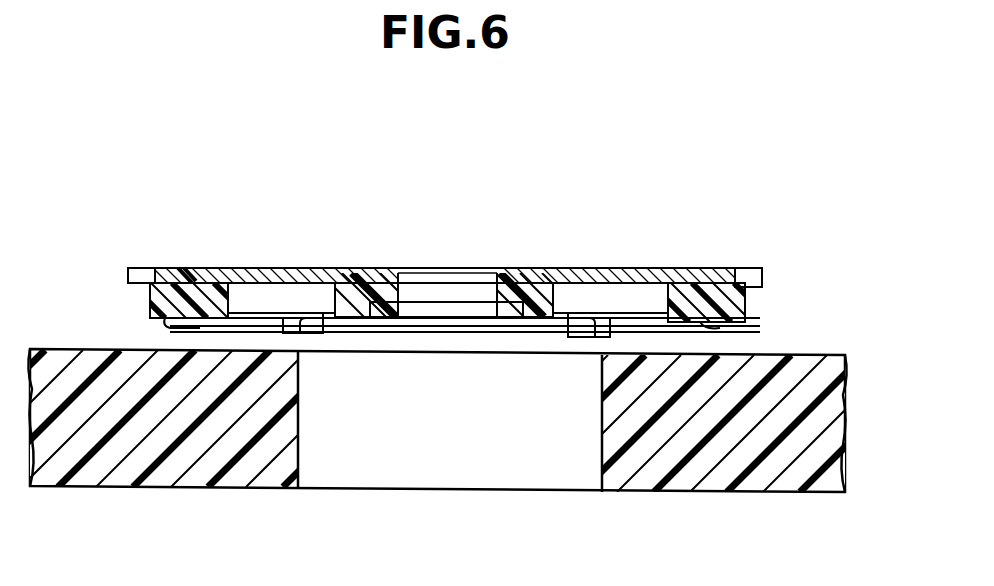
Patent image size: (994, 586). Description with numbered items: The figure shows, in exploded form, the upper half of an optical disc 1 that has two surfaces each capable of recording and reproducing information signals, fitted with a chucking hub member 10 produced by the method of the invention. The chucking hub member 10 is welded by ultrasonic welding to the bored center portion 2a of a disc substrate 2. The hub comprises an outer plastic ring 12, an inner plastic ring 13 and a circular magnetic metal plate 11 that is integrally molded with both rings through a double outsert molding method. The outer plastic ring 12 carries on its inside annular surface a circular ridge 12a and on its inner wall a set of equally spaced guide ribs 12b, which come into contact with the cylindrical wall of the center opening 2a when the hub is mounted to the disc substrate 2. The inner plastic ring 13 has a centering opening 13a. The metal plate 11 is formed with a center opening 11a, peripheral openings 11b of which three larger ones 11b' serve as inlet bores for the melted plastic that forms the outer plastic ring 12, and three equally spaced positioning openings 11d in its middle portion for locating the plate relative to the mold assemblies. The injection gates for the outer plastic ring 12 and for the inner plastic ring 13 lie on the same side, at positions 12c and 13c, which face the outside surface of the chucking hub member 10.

The optical disc 1 is at (75, 333).
The disc substrate 2 is at (118, 482).
The bored center portion 2a is at (588, 452).
The chucking hub member 10 is at (285, 268).
The circular magnetic metal plate 11 is at (580, 267).
The center opening 11a is at (505, 267).
The openings 11b is at (171, 227).
The larger openings 11b' is at (761, 338).
The positioning openings 11d is at (635, 267).
The outer plastic ring 12 is at (748, 292).
The circular ridge 12a is at (172, 320).
The guide ribs 12b is at (312, 335).
The injection gate position for outer plastic ring 12c is at (712, 267).
The inner plastic ring 13 is at (553, 267).
The centering opening 13a is at (475, 267).
The injection gate position for inner plastic ring 13c is at (377, 267).